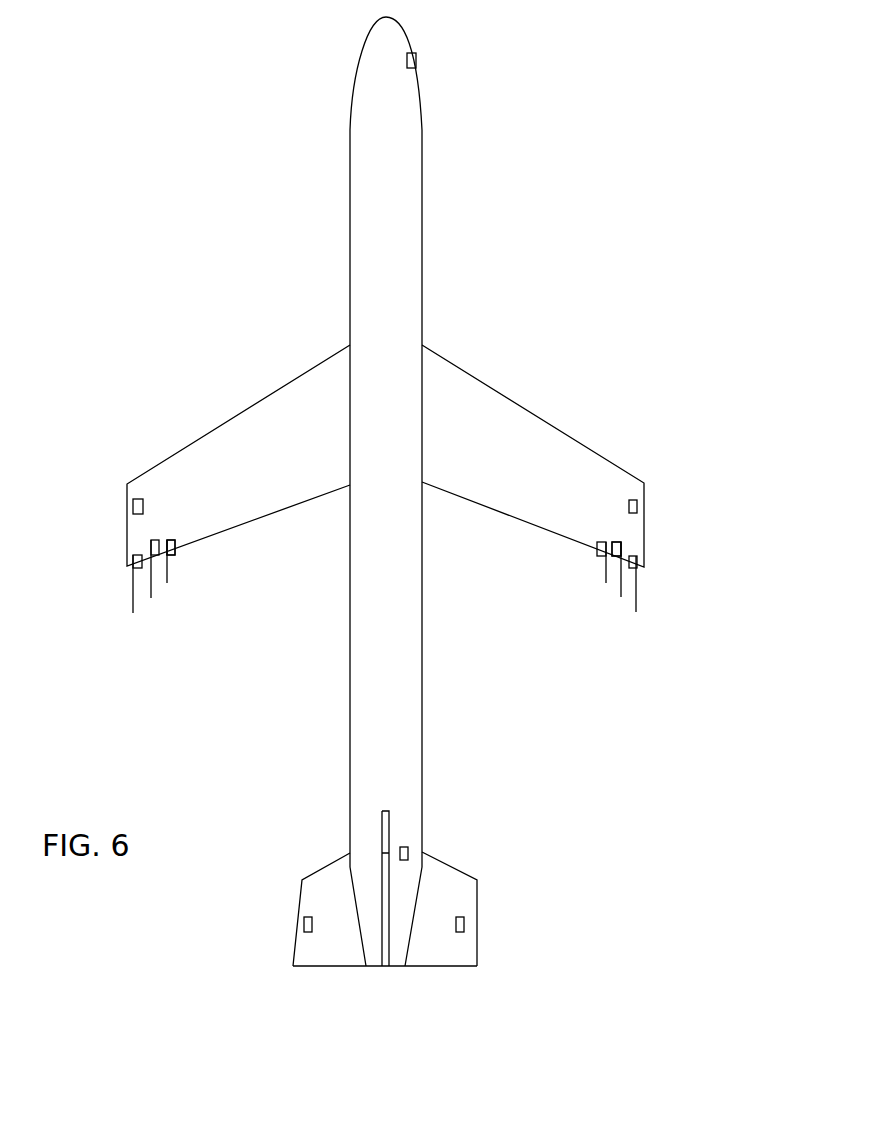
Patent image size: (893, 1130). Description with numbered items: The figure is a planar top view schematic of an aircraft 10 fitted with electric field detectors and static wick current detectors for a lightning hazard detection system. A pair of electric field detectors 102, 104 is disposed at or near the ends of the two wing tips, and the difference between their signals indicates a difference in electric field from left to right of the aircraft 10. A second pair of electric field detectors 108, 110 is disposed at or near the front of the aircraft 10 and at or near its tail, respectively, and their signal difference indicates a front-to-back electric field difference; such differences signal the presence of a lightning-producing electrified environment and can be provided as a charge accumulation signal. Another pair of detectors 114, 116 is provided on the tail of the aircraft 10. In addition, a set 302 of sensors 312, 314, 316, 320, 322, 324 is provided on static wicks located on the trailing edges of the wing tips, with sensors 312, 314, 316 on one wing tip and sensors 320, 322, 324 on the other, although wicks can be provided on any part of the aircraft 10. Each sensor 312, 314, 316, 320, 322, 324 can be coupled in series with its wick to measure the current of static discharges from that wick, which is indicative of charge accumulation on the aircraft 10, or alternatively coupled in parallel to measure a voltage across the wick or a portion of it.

The aircraft 10 is at (582, 202).
The electric field detector 108 is at (413, 55).
The electric field detector 102 is at (133, 503).
The electric field detector 104 is at (633, 500).
The electric field detector 110 is at (404, 847).
The detector 114 is at (460, 917).
The detector 116 is at (304, 922).
The set of sensors 302 is at (193, 598).
The sensor 312 is at (162, 540).
The sensor 314 is at (175, 553).
The sensor 316 is at (133, 560).
The sensor 320 is at (597, 540).
The sensor 322 is at (615, 558).
The sensor 324 is at (637, 560).